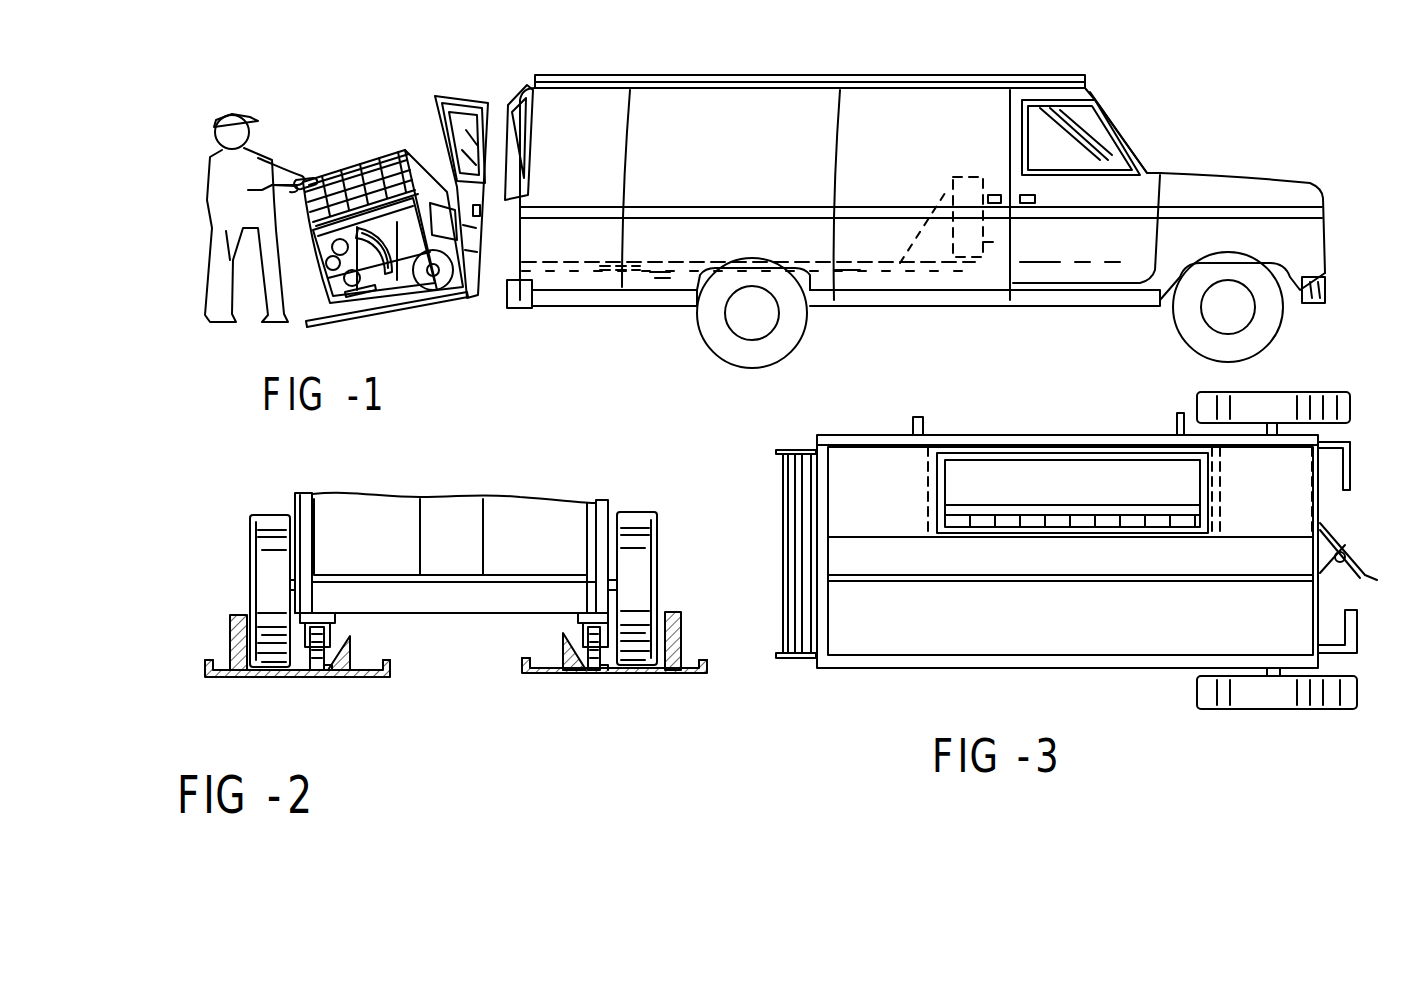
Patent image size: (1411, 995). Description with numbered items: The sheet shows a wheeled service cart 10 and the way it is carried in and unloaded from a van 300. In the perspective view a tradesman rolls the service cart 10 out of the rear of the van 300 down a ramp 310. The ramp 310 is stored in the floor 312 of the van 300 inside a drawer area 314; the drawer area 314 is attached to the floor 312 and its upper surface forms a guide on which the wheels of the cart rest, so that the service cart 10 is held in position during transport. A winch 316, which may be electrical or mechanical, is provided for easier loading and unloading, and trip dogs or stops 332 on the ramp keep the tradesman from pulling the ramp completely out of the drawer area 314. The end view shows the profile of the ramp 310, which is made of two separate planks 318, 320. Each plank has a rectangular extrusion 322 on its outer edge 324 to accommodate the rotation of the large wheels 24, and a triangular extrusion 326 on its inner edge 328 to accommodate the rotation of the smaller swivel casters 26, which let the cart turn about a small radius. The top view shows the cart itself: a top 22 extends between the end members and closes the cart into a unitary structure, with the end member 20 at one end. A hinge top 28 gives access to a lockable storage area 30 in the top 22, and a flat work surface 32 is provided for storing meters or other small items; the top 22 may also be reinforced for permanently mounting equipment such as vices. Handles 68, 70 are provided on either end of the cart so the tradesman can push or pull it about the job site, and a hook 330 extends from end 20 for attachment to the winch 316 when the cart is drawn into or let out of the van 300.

In FIG. 1, the service cart 10 is at (335, 168).
In FIG. 3, the end member 20 is at (1335, 612).
In FIG. 3, the top 22 is at (1073, 440).
In FIG. 2, the wheels 24 is at (250, 518).
In FIG. 2, the wheels 26 is at (312, 675).
In FIG. 3, the hinge top 28 is at (982, 460).
In FIG. 3, the lockable storage area 30 is at (900, 462).
In FIG. 3, the flat work surface 32 is at (880, 545).
In FIG. 1, the handle 68 is at (410, 150).
In FIG. 1, the handle 70 is at (297, 178).
In FIG. 3, the handle 70 is at (783, 470).
In FIG. 1, the van 300 is at (705, 98).
In FIG. 1, the ramp 310 is at (368, 305).
In FIG. 2, the ramp 310 is at (240, 677).
In FIG. 1, the floor 312 is at (845, 270).
In FIG. 1, the drawer area 314 is at (650, 272).
In FIG. 1, the winch 316 is at (986, 242).
In FIG. 2, the plank 318 is at (332, 673).
In FIG. 2, the plank 320 is at (607, 673).
In FIG. 2, the rectangular extrusion 322 is at (230, 620).
In FIG. 2, the outer edge 324 is at (205, 663).
In FIG. 2, the triangular extrusion 326 is at (350, 639).
In FIG. 2, the inner edge 328 is at (392, 677).
In FIG. 3, the hook 330 is at (1330, 545).
In FIG. 1, the trip dogs or stops 332 is at (615, 262).